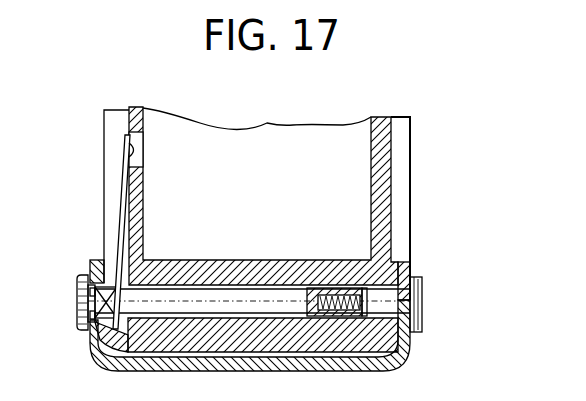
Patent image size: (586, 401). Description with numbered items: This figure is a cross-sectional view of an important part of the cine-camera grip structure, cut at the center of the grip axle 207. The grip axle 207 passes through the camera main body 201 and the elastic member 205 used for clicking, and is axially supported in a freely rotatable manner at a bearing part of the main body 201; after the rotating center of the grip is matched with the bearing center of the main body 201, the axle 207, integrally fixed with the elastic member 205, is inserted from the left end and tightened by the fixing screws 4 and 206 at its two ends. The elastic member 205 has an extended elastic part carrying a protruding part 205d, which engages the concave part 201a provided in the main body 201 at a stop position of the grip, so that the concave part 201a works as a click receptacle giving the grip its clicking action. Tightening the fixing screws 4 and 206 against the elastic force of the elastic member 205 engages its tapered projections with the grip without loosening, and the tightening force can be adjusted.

The main body 201 is at (118, 123).
The concave part 201a is at (143, 150).
The elastic member 205 is at (118, 225).
The protruding part 205d is at (129, 150).
The grip axle 207 is at (247, 300).
The fixing screw 4 is at (83, 300).
The fixing screw 206 is at (415, 334).